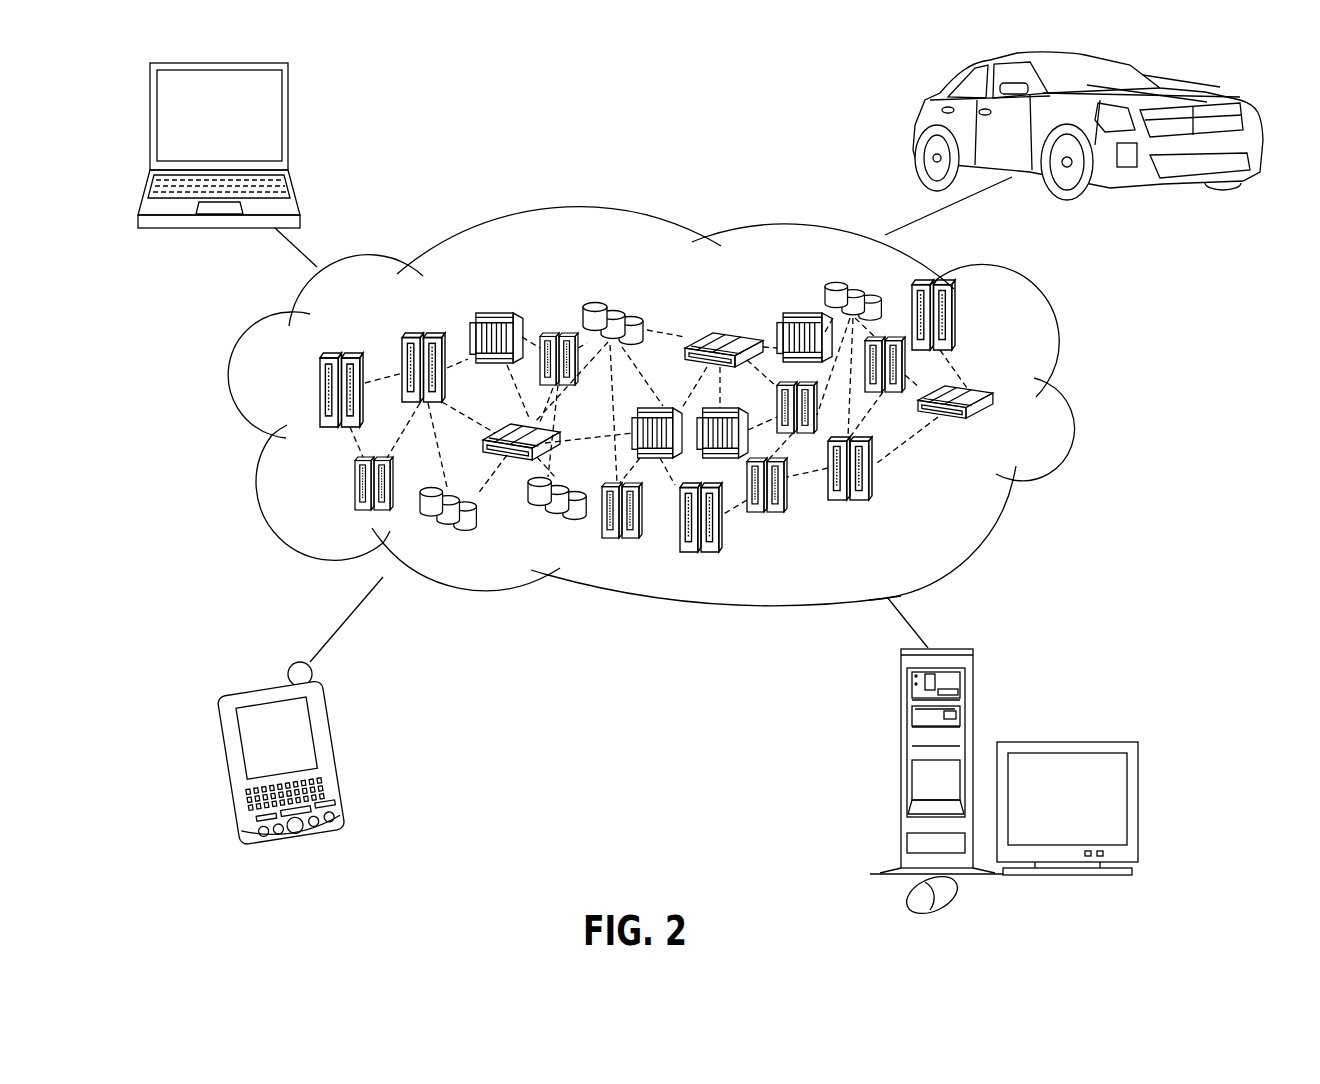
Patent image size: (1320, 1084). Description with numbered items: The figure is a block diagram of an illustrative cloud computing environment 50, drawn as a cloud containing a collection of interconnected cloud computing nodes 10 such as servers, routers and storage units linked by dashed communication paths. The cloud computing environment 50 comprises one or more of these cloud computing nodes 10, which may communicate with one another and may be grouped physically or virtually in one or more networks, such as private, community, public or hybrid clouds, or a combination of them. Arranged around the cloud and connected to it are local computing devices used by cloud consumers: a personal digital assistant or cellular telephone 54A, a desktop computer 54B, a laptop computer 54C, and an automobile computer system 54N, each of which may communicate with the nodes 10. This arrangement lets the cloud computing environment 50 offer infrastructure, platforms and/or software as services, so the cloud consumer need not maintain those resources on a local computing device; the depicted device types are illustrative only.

The cloud computing environment 50 is at (1062, 402).
The cloud computing node 10 is at (978, 494).
The personal digital assistant or cellular telephone 54A is at (347, 722).
The desktop computer 54B is at (901, 708).
The laptop computer 54C is at (288, 100).
The automobile computer system 54N is at (915, 118).